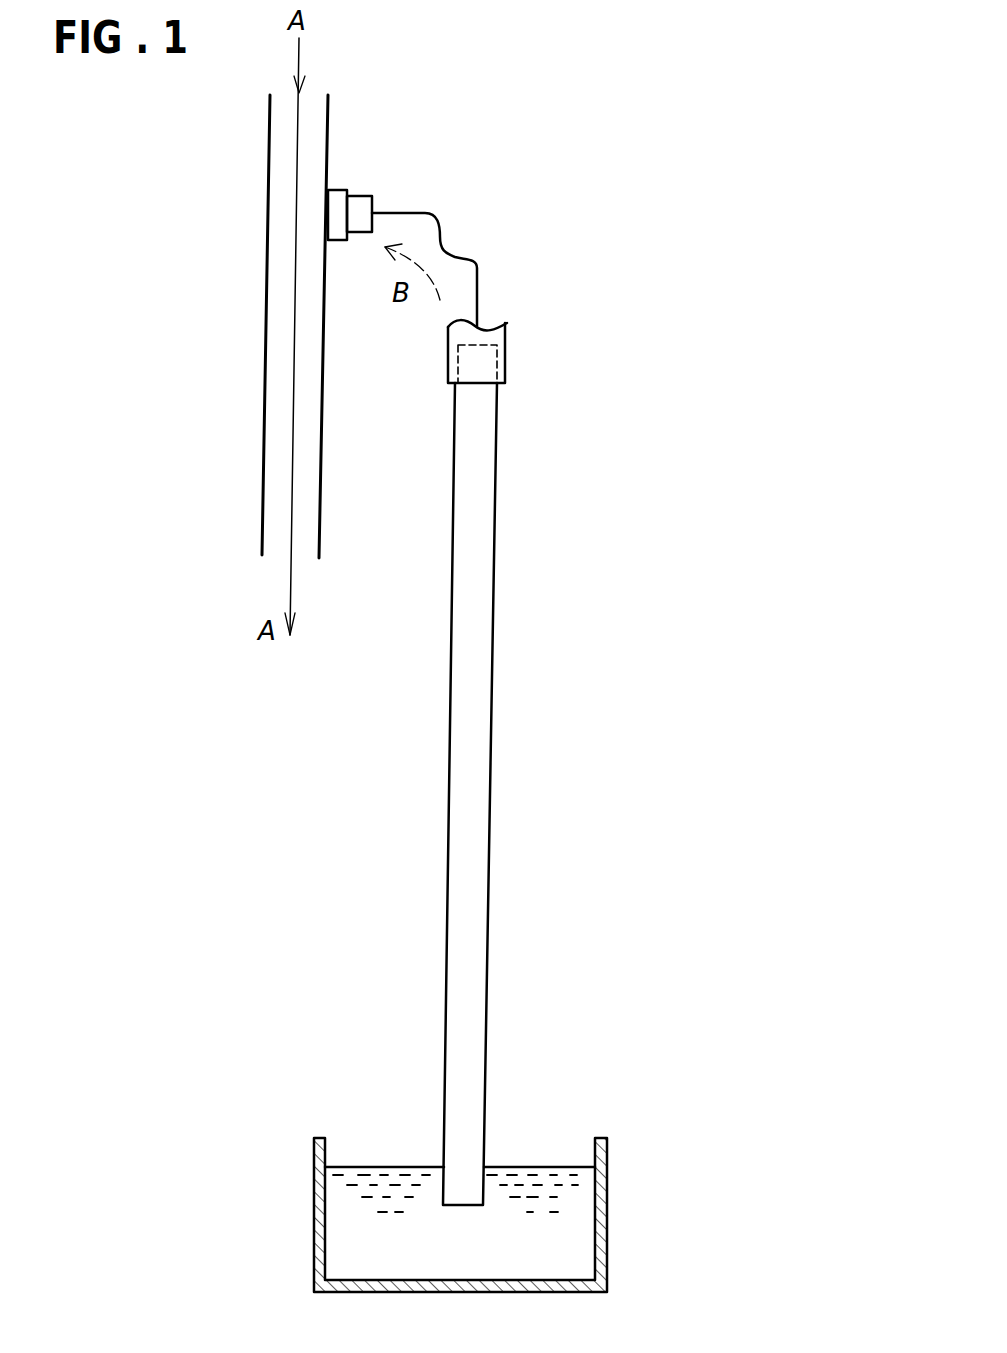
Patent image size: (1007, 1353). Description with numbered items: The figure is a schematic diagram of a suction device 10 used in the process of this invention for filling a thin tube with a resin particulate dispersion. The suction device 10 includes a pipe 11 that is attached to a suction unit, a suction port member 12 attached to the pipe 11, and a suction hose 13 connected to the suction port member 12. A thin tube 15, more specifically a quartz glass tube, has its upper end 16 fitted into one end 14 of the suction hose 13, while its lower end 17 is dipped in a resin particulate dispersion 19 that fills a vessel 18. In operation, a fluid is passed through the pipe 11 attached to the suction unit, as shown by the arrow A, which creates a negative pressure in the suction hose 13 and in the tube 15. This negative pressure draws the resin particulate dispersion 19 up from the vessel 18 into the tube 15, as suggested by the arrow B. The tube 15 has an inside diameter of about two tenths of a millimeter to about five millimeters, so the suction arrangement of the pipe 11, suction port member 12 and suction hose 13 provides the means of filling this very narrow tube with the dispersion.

The suction device 10 is at (541, 157).
The pipe 11 is at (268, 163).
The suction port member 12 is at (335, 197).
The suction hose 13 is at (357, 205).
The one end of the suction hose 14 is at (506, 371).
The thin tube 15 is at (487, 592).
The upper end of the thin tube 16 is at (455, 360).
The lower end of the thin tube 17 is at (483, 1197).
The vessel 18 is at (608, 1210).
The resin particulate dispersion 19 is at (543, 1233).